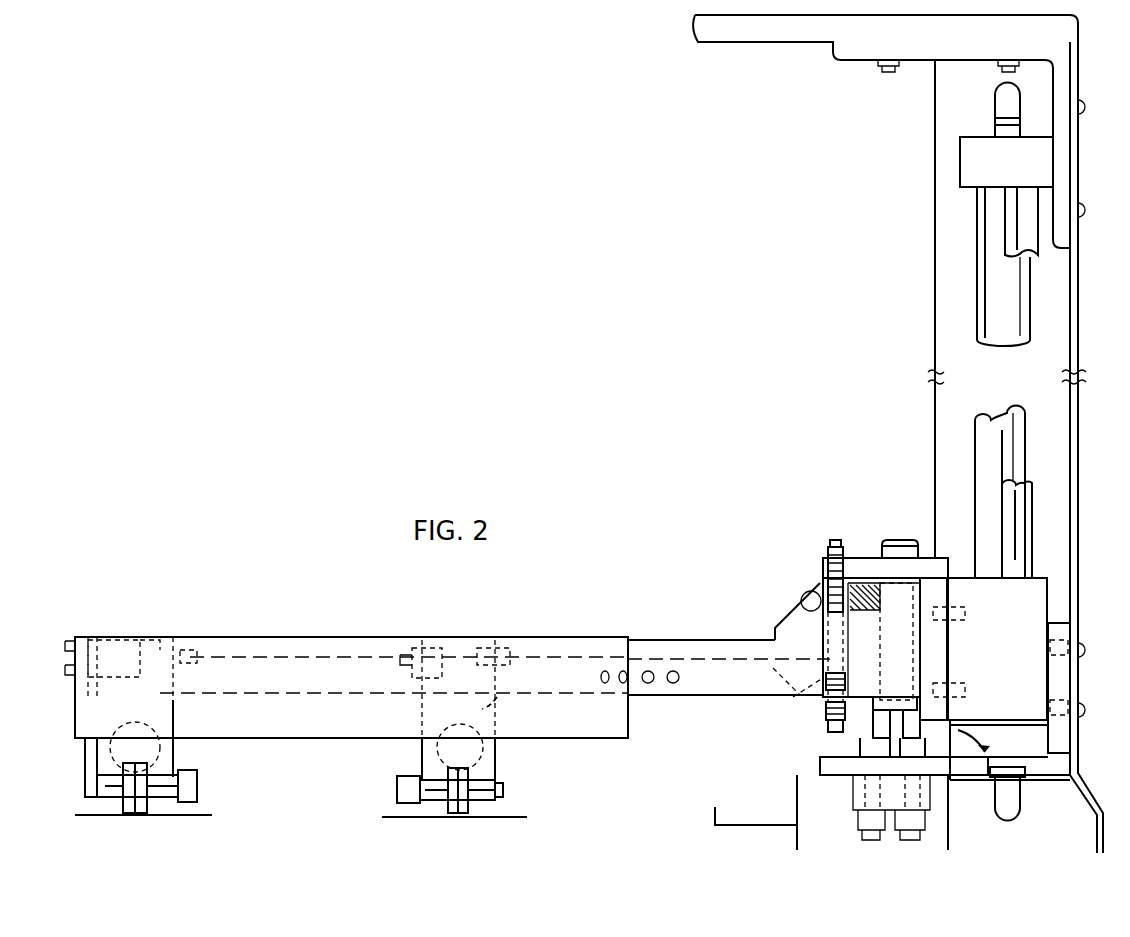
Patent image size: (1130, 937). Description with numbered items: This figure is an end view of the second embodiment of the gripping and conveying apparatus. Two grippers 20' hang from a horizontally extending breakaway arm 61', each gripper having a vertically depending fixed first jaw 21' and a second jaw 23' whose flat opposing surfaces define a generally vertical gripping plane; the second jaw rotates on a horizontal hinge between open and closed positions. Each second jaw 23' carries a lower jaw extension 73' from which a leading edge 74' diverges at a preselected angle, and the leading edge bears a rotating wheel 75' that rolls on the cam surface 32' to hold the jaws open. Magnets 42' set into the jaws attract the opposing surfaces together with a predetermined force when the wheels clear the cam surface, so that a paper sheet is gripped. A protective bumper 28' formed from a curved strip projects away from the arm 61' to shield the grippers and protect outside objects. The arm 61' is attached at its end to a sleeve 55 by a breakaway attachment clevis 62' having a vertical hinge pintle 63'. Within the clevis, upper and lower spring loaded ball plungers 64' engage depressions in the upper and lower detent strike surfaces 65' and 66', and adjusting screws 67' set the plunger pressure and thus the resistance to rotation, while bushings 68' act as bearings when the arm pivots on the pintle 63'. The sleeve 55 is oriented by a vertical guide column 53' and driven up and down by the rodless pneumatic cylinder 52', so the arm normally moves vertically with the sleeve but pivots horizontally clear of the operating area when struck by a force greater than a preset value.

The gripper 20' is at (299, 663).
The first jaw 21' is at (241, 721).
The second jaw 23' is at (238, 694).
The protective bumper 28' is at (372, 704).
The cam surface 32' is at (301, 826).
The magnet 42' is at (266, 759).
The pneumatic cylinder 52' is at (956, 382).
The vertical guide column 53' is at (961, 221).
The sleeve 55 is at (1040, 595).
The breakaway arm 61' is at (729, 641).
The breakaway attachment clevis 62' is at (851, 658).
The hinge pintle 63' is at (904, 517).
The spring loaded ball plunger 64' is at (802, 640).
The upper detent strike surface 65' is at (790, 603).
The lower detent strike surface 66' is at (801, 700).
The adjusting screw 67' is at (809, 636).
The bushing 68' is at (874, 637).
The lower jaw extension 73' is at (533, 735).
The leading edge 74' is at (321, 810).
The rotating wheel 75' is at (275, 808).